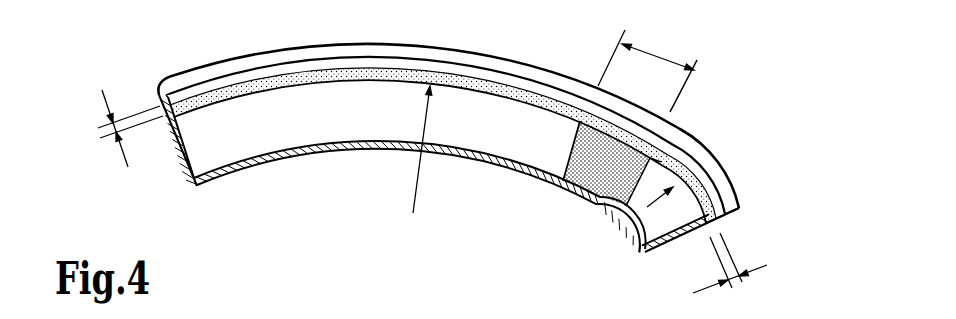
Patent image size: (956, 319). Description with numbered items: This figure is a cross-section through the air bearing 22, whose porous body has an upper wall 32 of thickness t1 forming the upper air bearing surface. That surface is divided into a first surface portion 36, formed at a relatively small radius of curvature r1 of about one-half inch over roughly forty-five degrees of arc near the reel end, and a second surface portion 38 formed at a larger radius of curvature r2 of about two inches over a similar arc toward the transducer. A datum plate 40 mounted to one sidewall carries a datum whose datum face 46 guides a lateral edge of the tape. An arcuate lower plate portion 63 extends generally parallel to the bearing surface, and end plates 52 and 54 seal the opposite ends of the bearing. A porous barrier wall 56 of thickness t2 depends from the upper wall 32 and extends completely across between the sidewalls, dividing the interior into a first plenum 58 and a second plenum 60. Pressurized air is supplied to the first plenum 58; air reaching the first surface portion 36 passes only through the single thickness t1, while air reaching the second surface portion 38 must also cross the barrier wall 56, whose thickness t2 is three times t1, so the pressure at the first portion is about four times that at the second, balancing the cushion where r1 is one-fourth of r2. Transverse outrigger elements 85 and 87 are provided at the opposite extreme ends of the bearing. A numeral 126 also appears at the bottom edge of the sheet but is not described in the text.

The air bearing 22 is at (716, 50).
The datum plate 40 is at (470, 52).
The second surface portion 38 is at (375, 68).
The datum face 46 is at (287, 70).
The first surface portion 36 is at (700, 167).
The upper wall 32 is at (327, 80).
The barrier wall 56 is at (605, 192).
The first plenum 58 is at (656, 179).
The lower plate portion 63 is at (378, 160).
The end plate 54 is at (180, 170).
The transverse outrigger element 87 is at (163, 93).
The end plate 52 is at (675, 249).
The transverse outrigger element 85 is at (721, 207).
The second plenum 60 is at (333, 126).
The element of adjacent figure 126 is at (465, 318).
The first radius of curvature r1 is at (664, 207).
The second radius of curvature r2 is at (434, 149).
The upper wall thickness t1 is at (422, 204).
The barrier wall thickness t2 is at (646, 53).